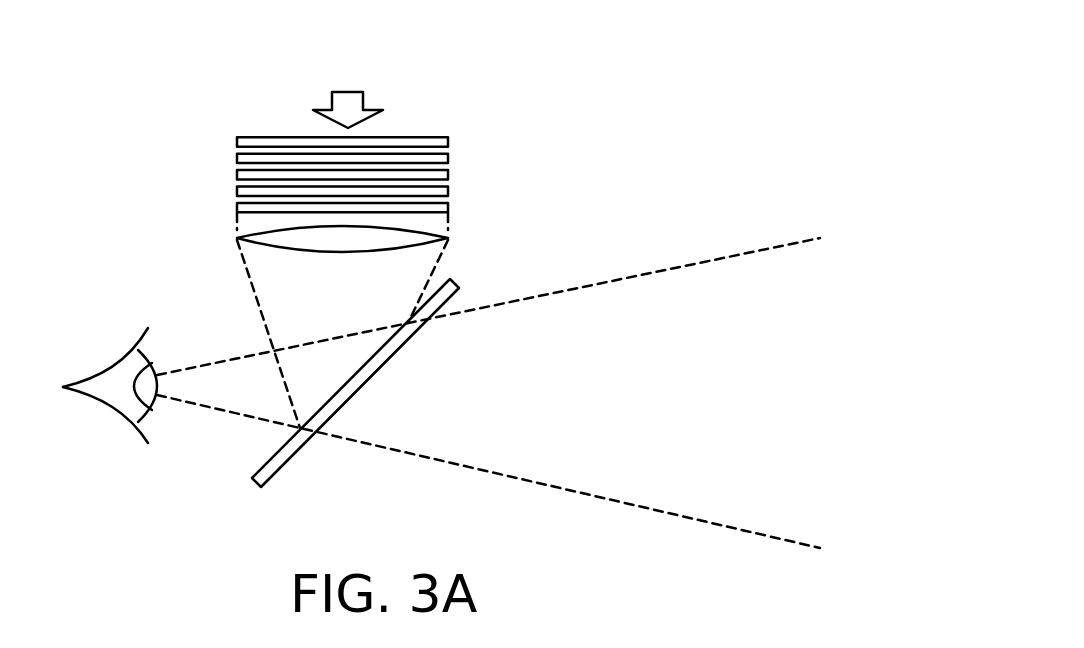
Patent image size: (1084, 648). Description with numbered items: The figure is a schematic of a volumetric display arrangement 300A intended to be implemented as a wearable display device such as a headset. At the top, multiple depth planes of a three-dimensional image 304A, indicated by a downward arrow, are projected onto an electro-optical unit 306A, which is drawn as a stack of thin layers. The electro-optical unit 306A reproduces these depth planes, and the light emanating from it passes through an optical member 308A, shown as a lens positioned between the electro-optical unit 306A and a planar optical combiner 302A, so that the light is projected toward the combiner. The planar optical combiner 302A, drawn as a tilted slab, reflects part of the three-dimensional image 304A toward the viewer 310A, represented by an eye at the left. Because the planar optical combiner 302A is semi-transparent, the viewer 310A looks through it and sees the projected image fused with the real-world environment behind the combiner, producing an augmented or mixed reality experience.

The volumetric display arrangement 300A is at (688, 72).
The planar optical combiner 302A is at (385, 363).
The three-dimensional image 304A is at (348, 93).
The electro-optical unit 306A is at (447, 133).
The optical member 308A is at (257, 242).
The viewer 310A is at (90, 338).